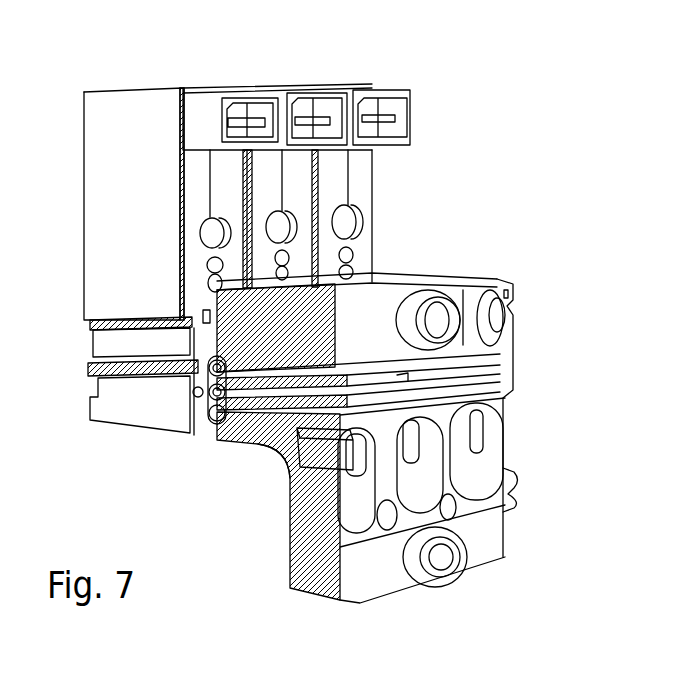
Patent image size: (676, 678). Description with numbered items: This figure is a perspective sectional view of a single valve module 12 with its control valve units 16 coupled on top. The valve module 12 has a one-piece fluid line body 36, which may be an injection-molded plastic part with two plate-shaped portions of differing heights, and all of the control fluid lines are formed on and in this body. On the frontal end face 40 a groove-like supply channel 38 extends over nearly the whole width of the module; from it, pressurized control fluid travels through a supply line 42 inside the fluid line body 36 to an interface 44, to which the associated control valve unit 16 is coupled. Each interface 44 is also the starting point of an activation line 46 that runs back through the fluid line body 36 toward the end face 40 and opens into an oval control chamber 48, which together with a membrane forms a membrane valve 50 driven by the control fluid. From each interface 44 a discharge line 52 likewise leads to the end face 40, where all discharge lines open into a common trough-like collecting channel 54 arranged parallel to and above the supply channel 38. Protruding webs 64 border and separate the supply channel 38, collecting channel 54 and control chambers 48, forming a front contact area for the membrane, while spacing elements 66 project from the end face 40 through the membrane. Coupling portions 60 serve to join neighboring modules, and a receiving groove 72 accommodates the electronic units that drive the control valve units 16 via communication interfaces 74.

The valve module 12 is at (471, 164).
The control valve unit 16 is at (142, 108).
The fluid line body 36 is at (300, 543).
The supply channel 38 is at (445, 387).
The end face 40 is at (462, 288).
The supply line 42 is at (213, 327).
The interface 44 is at (195, 343).
The activation line 46 is at (263, 430).
The control chamber 48 is at (490, 518).
The membrane valve 50 is at (520, 494).
The discharge line 52 is at (213, 326).
The collecting channel 54 is at (445, 368).
The coupling portion 60 is at (493, 310).
The web 64 is at (365, 367).
The spacing element 66 is at (433, 295).
The receiving groove 72 is at (267, 292).
The communication interface 74 is at (317, 96).